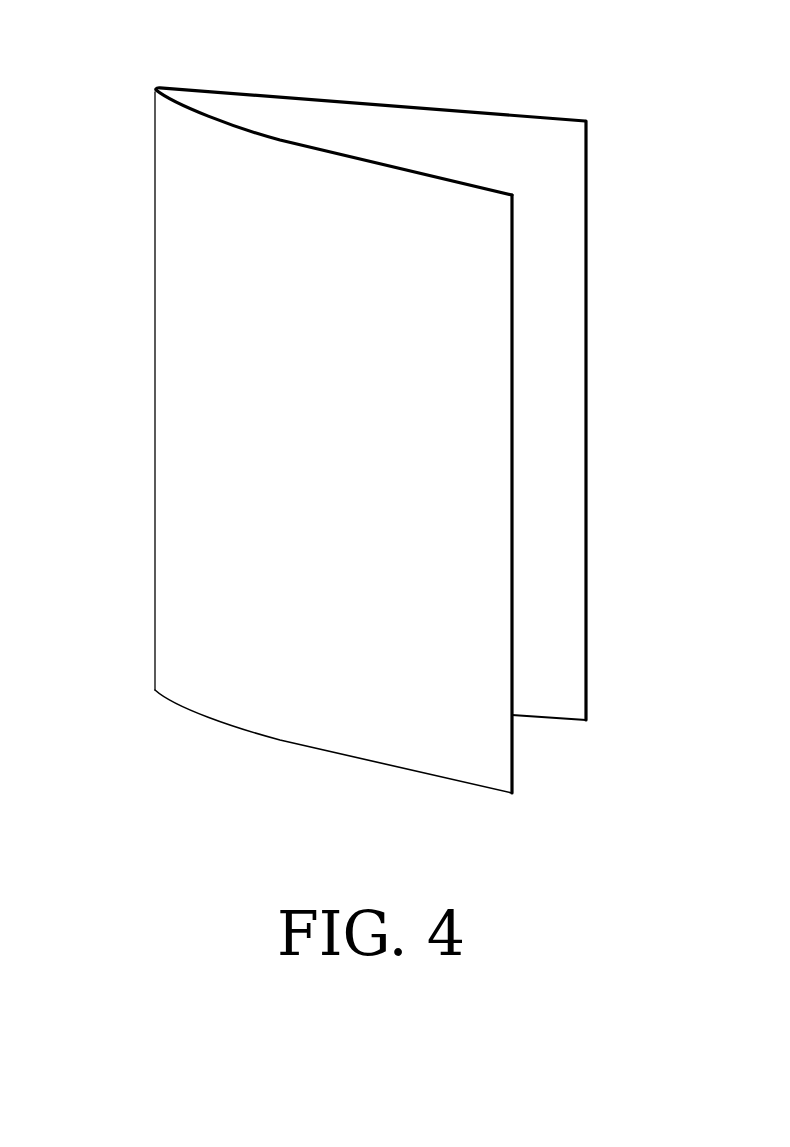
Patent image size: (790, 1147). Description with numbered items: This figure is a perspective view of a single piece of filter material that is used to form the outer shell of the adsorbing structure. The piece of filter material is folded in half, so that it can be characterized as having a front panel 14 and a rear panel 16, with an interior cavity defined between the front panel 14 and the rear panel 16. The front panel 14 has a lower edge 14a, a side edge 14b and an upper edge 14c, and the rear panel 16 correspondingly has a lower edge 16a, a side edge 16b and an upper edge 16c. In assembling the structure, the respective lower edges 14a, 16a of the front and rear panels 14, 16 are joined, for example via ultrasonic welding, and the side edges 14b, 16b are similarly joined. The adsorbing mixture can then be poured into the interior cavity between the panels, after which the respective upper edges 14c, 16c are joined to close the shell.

The front panel 14 is at (371, 417).
The lower edge of the front panel 14a is at (292, 744).
The side edge of the front panel 14b is at (514, 434).
The upper edge of the front panel 14c is at (268, 137).
The rear panel 16 is at (416, 424).
The lower edge of the rear panel 16a is at (552, 722).
The side edge of the rear panel 16b is at (587, 321).
The upper edge of the rear panel 16c is at (384, 104).